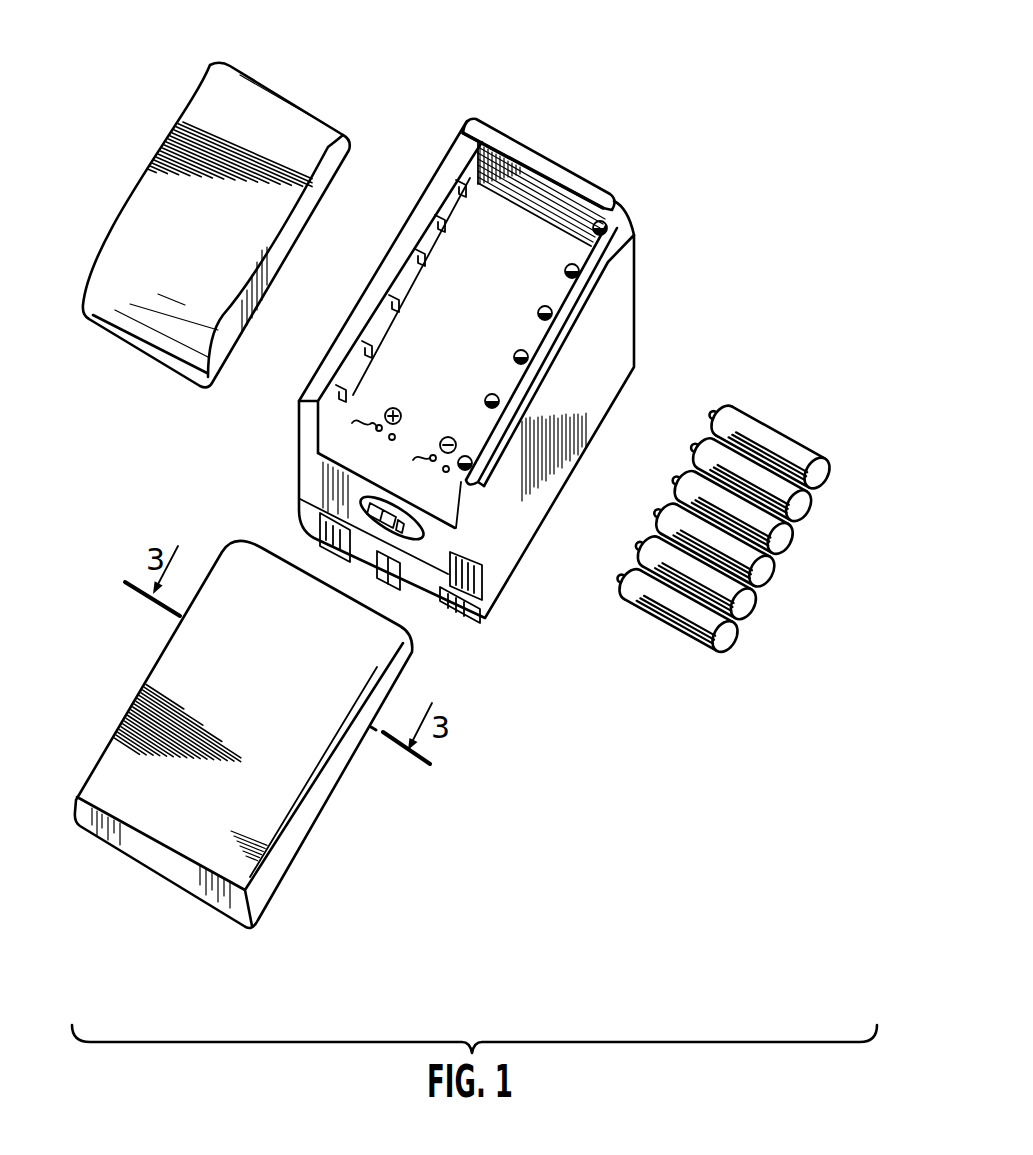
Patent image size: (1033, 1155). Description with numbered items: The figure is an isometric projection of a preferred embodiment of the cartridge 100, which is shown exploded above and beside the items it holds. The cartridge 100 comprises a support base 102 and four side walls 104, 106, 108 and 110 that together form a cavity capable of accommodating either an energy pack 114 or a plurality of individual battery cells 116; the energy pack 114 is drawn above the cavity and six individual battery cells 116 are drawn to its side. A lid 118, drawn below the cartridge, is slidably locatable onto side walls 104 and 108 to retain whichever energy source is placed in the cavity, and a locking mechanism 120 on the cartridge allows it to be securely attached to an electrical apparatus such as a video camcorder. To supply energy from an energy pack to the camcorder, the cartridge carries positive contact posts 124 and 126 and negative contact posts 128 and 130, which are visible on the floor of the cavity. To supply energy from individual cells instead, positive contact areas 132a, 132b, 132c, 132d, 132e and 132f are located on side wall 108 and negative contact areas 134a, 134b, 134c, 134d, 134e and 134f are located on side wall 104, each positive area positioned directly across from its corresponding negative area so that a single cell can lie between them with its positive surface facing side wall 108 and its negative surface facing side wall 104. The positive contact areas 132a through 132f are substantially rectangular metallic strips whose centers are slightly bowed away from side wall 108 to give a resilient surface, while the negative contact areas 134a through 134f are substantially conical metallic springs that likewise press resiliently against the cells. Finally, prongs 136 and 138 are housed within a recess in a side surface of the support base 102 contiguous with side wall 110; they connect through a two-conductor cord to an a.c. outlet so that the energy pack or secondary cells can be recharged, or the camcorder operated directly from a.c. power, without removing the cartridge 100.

The cartridge 100 is at (478, 483).
The support base 102 is at (487, 392).
The side wall 104 is at (592, 400).
The side wall 106 is at (546, 181).
The side wall 108 is at (385, 315).
The side wall 110 is at (368, 410).
The energy pack 114 is at (207, 98).
The individual battery cells 116 is at (805, 426).
The lid 118 is at (212, 625).
The locking mechanism 120 is at (415, 588).
The positive contact post 124 is at (369, 431).
The positive contact post 126 is at (390, 439).
The negative contact post 128 is at (429, 462).
The negative contact post 130 is at (446, 472).
The positive contact area 132a is at (460, 180).
The positive contact area 132b is at (436, 218).
The positive contact area 132c is at (416, 257).
The positive contact area 132d is at (392, 296).
The positive contact area 132e is at (364, 345).
The positive contact area 132f is at (340, 388).
The negative contact area 134a is at (607, 224).
The negative contact area 134b is at (580, 268).
The negative contact area 134c is at (552, 311).
The negative contact area 134d is at (529, 356).
The negative contact area 134e is at (488, 403).
The negative contact area 134f is at (482, 486).
The prong 136 is at (345, 498).
The prong 138 is at (385, 500).